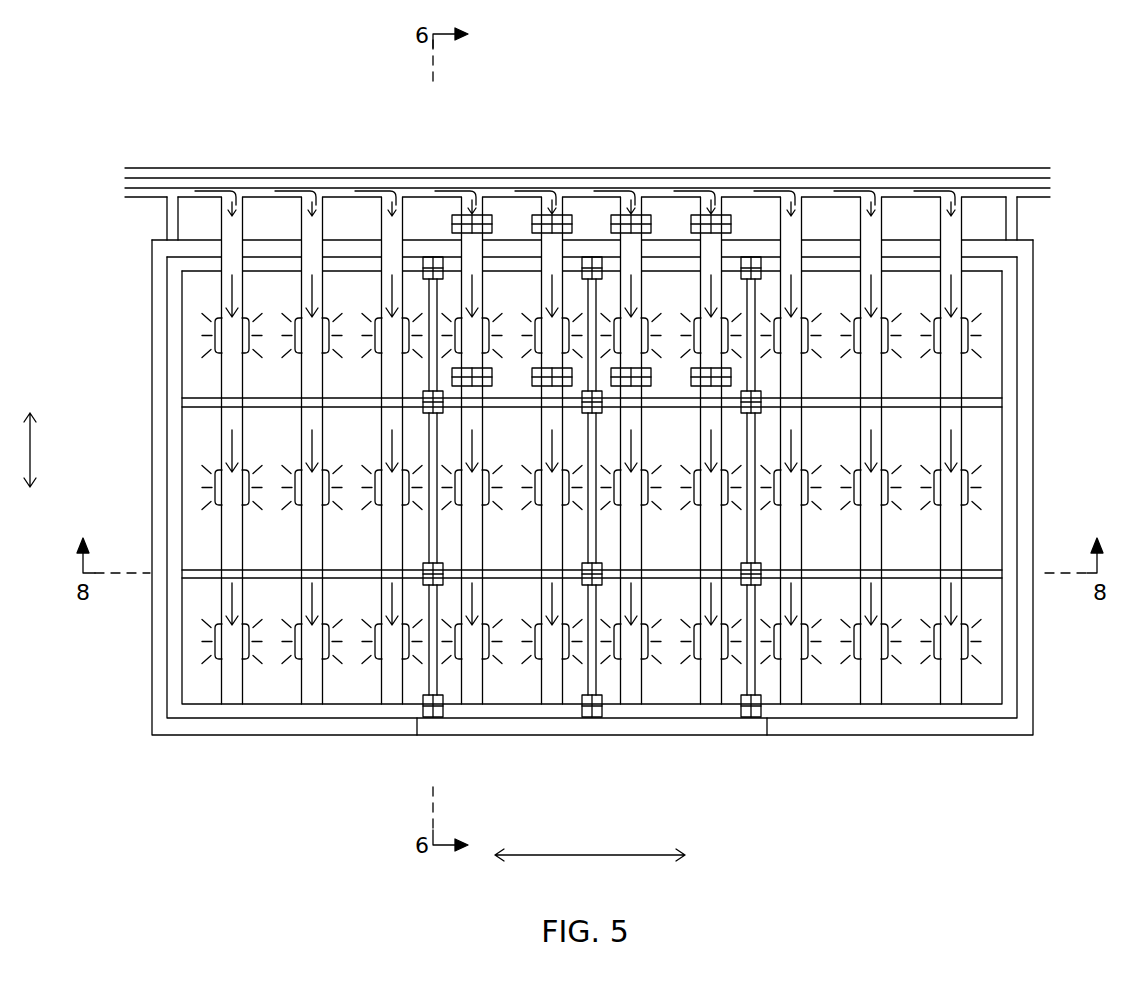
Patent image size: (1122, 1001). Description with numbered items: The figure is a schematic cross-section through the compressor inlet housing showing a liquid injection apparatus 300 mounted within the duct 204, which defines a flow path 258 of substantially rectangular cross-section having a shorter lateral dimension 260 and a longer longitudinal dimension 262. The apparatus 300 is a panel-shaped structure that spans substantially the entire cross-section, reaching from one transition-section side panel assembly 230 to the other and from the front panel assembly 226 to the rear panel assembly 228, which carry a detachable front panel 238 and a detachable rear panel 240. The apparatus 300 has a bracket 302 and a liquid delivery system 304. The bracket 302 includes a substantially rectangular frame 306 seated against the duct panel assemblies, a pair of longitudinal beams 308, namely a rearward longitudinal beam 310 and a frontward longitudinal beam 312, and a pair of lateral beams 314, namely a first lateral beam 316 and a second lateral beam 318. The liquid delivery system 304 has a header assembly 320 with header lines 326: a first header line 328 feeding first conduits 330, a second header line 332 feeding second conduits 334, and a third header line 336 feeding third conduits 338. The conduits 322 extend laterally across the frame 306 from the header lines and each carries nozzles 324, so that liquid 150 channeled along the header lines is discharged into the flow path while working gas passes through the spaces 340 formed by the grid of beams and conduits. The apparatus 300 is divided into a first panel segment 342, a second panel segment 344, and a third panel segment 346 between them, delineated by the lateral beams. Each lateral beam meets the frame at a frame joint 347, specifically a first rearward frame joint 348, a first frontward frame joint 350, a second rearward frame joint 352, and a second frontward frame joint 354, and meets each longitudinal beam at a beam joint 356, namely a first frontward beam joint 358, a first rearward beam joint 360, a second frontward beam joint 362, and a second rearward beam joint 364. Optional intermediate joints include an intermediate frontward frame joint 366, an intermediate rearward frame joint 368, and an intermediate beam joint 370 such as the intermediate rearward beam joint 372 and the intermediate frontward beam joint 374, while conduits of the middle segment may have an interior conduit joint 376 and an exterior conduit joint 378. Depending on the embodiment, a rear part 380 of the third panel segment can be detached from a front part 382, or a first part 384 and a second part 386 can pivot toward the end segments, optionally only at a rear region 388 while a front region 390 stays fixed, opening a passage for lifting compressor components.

The liquid 150 is at (325, 190).
The duct 204 is at (130, 307).
The front panel assembly 226 is at (255, 237).
The rear panel assembly 228 is at (278, 755).
The side panel assemblies 230 is at (1038, 339).
The detachable front panel 238 is at (510, 247).
The detachable rear panel 240 is at (484, 722).
The flow path 258 is at (992, 327).
The lateral dimension 260 is at (38, 452).
The longitudinal dimension 262 is at (598, 852).
The liquid injection apparatus 300 is at (993, 712).
The bracket 302 is at (1013, 480).
The liquid delivery system 304 is at (977, 165).
The frame 306 is at (1010, 512).
The longitudinal beam 308 is at (197, 412).
The rearward longitudinal beam 310 is at (189, 583).
The frontward longitudinal beam 312 is at (208, 398).
The lateral beam 314 is at (744, 671).
The first lateral beam 316 is at (424, 700).
The second lateral beam 318 is at (757, 655).
The header assembly 320 is at (721, 166).
The conduit 322 is at (643, 295).
The nozzle 324 is at (426, 410).
The header line 326 is at (1030, 167).
The first header line 328 is at (150, 199).
The first conduits 330 is at (222, 295).
The second header line 332 is at (264, 177).
The second conduits 334 is at (460, 290).
The third header line 336 is at (812, 167).
The third conduits 338 is at (860, 212).
The spaces 340 is at (907, 557).
The first panel segment 342 is at (341, 720).
The second panel segment 344 is at (893, 712).
The third panel segment 346 is at (537, 712).
The frame joint 347 is at (748, 255).
The first rearward frame joint 348 is at (444, 712).
The first frontward frame joint 350 is at (422, 263).
The second rearward frame joint 352 is at (742, 712).
The second frontward frame joint 354 is at (761, 270).
The beam joint 356 is at (770, 393).
The first frontward beam joint 358 is at (423, 393).
The first rearward beam joint 360 is at (297, 647).
The second frontward beam joint 362 is at (760, 392).
The second rearward beam joint 364 is at (762, 568).
The intermediate frontward frame joint 366 is at (596, 257).
The intermediate rearward frame joint 368 is at (592, 718).
The intermediate beam joint 370 is at (672, 638).
The intermediate rearward beam joint 372 is at (582, 580).
The intermediate frontward beam joint 374 is at (592, 390).
The interior conduit joint 376 is at (232, 580).
The exterior conduit joint 378 is at (455, 215).
The rear part 380 is at (675, 655).
The front part 382 is at (508, 344).
The first part 384 is at (504, 552).
The second part 386 is at (670, 541).
The rear region 388 is at (602, 580).
The front region 390 is at (503, 276).